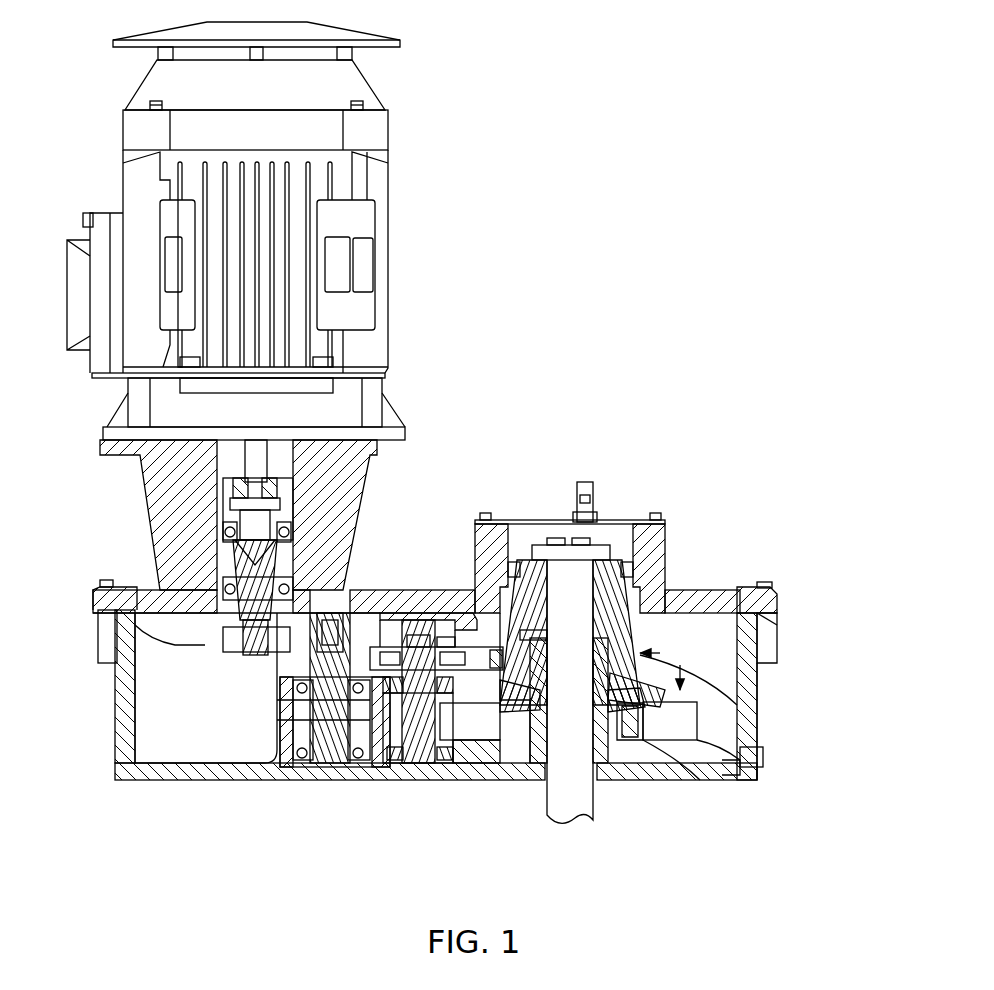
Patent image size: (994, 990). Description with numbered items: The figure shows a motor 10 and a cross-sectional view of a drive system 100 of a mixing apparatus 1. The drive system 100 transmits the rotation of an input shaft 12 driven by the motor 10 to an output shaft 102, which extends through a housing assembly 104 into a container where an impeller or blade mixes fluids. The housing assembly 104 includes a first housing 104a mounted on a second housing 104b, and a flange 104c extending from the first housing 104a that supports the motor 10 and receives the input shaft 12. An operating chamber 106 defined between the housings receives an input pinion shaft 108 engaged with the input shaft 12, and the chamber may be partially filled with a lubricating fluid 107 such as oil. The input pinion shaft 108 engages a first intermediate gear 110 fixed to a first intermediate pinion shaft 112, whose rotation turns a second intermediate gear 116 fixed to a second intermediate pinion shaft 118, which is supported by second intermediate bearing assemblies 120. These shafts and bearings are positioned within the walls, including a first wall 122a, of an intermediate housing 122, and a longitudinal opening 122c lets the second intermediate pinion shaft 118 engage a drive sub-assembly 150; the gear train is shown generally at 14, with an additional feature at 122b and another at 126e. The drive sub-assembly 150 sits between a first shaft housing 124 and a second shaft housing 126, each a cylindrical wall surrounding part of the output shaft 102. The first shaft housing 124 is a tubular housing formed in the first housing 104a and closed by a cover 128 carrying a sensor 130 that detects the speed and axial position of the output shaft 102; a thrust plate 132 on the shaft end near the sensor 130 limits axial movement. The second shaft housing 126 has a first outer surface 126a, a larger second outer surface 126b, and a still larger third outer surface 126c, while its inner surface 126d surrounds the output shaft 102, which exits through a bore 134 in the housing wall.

The mixing apparatus 1 is at (590, 37).
The motor 10 is at (372, 88).
The input shaft 12 is at (245, 452).
The gear set 14 is at (332, 762).
The drive system 100 is at (585, 412).
The output shaft 102 is at (597, 817).
The housing assembly 104 is at (770, 670).
The first housing 104a is at (752, 585).
The second housing 104b is at (760, 692).
The flange 104c is at (150, 520).
The operating chamber 106 is at (152, 705).
The fluid 107 is at (157, 645).
The input pinion shaft 108 is at (220, 640).
The first intermediate gear 110 is at (368, 597).
The first intermediate pinion shaft 112 is at (310, 665).
The second intermediate gear 116 is at (390, 630).
The second intermediate pinion shaft 118 is at (387, 780).
The second intermediate bearing assemblies 120 is at (436, 637).
The intermediate housing 122 is at (362, 794).
The first wall 122a is at (280, 702).
The second bearing assembly 122b is at (453, 762).
The longitudinal opening 122c is at (487, 762).
The first shaft housing 124 is at (668, 535).
The second shaft housing 126 is at (617, 760).
The first outer surface 126a is at (695, 740).
The second outer surface 126b is at (722, 767).
The third outer surface 126c is at (677, 760).
The inner surface 126d is at (690, 703).
The gear face 126e is at (537, 633).
The cover 128 is at (635, 513).
The sensor 130 is at (578, 490).
The thrust plate 132 is at (640, 547).
The bore 134 is at (542, 780).
The drive sub-assembly 150 is at (680, 675).